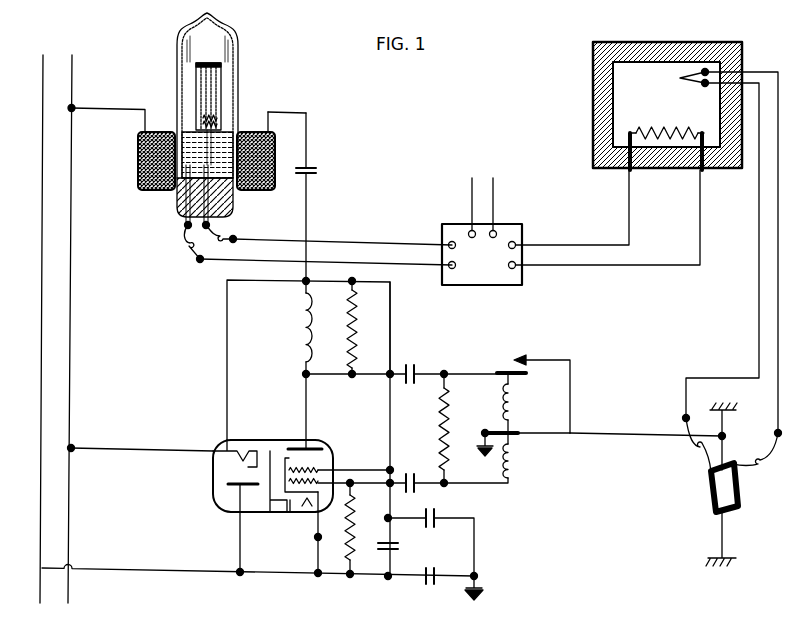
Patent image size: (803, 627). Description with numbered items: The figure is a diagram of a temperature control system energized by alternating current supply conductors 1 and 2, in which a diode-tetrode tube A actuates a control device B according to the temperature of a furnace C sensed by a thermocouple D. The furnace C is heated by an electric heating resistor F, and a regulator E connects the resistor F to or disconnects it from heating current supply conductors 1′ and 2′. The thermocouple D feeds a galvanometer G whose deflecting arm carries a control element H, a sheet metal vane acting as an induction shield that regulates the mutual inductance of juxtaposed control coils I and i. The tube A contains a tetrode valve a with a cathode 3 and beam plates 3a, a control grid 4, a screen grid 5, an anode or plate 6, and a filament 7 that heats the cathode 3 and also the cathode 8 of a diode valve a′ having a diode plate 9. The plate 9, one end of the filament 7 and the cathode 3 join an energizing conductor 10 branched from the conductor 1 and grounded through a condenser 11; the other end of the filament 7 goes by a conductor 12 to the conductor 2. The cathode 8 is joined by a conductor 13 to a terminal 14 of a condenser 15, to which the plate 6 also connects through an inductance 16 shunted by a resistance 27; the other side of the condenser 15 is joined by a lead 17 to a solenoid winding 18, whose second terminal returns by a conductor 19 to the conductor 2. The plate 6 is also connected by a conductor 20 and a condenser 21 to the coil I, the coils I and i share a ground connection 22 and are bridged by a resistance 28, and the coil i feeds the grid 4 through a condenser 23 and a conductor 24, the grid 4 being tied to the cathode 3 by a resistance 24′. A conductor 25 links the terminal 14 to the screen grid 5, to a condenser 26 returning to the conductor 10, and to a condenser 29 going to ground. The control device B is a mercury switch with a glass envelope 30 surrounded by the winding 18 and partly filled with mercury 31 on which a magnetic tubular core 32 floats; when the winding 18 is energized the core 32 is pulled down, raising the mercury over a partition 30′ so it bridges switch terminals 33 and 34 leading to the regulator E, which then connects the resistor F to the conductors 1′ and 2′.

The alternating current supply conductor 1 is at (41, 245).
The alternating current supply conductor 2 is at (74, 246).
The conductor 19 is at (115, 108).
The control device B is at (172, 200).
The glass envelope 30 is at (239, 45).
The tubular core 32 is at (180, 74).
The partition 30′ is at (220, 118).
The body of mercury 31 is at (233, 206).
The solenoid winding 18 is at (138, 150).
The switch terminal 34 is at (404, 280).
The switch terminal 33 is at (208, 227).
The lead 17 is at (308, 128).
The condenser 15 is at (317, 172).
The condenser terminal 14 is at (308, 212).
The conductor 13 is at (226, 360).
The inductance 16 is at (304, 306).
The resistance 27 is at (358, 330).
The conductor 20 is at (360, 372).
The conductor 25 is at (391, 335).
The diode-tetrode tube A is at (257, 440).
The conductor 12 is at (136, 448).
The cathode 8 is at (222, 462).
The anode or plate 6 is at (311, 442).
The diode plate 9 is at (224, 496).
The diode valve a′ is at (225, 484).
The screen grid 5 is at (336, 460).
The beam plates 3a is at (330, 456).
The tetrode valve a is at (340, 470).
The filament 7 is at (268, 514).
The cathode 3 is at (298, 512).
The control grid 4 is at (326, 534).
The energizing conductor 10 is at (184, 568).
The resistance 24′ is at (354, 521).
The condenser 21 is at (412, 366).
The resistance 28 is at (438, 422).
The ground connection 22 is at (484, 433).
The condenser 23 is at (406, 478).
The conductor 24 is at (484, 485).
The inductance or control coil I is at (500, 394).
The inductance or control coil i is at (500, 464).
The control element H is at (516, 431).
The galvanometer G is at (708, 485).
The regulator E is at (483, 286).
The heating current supply conductor 1′ is at (470, 184).
The heating current supply conductor 2′ is at (496, 185).
The furnace C is at (593, 64).
The thermocouple D is at (679, 78).
The electric heating resistor F is at (665, 126).
The condenser 26 is at (398, 547).
The condenser 29 is at (424, 510).
The condenser 11 is at (432, 586).